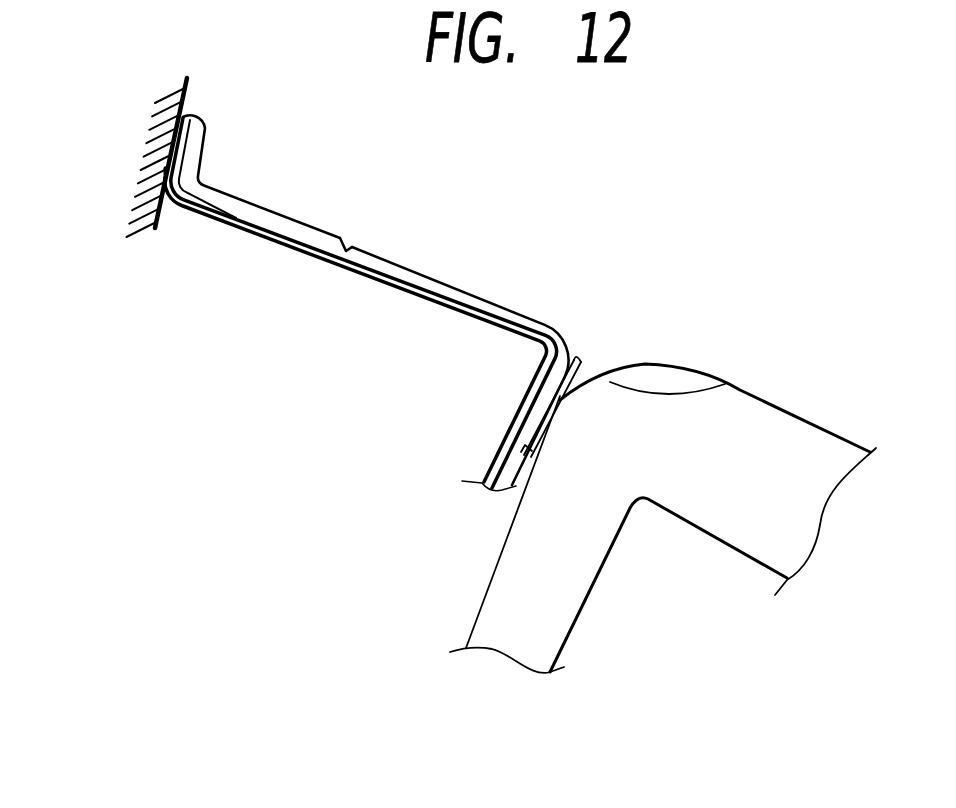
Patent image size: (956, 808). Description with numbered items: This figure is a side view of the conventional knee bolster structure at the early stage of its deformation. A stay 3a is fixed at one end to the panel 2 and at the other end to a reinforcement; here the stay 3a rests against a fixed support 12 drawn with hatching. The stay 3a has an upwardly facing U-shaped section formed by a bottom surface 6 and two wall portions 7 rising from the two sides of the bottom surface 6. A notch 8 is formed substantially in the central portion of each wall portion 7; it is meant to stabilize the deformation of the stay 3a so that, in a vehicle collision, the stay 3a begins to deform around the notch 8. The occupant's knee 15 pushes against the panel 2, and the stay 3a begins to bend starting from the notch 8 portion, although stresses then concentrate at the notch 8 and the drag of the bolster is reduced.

The wall / fixed support 12 is at (165, 164).
The stay 3a is at (280, 219).
The wall portion 7 is at (241, 216).
The notch 8 is at (354, 244).
The bottom surface 6 is at (371, 279).
The panel 2 is at (590, 367).
The knee 15 is at (703, 380).